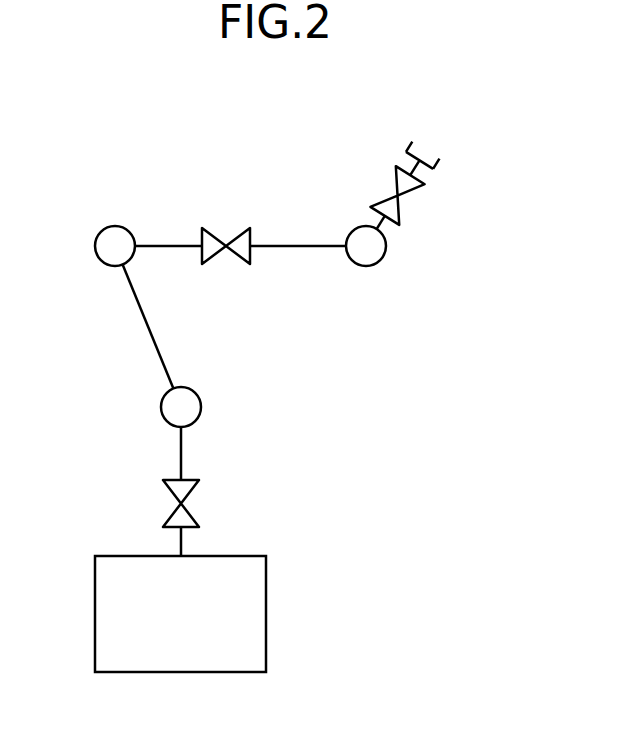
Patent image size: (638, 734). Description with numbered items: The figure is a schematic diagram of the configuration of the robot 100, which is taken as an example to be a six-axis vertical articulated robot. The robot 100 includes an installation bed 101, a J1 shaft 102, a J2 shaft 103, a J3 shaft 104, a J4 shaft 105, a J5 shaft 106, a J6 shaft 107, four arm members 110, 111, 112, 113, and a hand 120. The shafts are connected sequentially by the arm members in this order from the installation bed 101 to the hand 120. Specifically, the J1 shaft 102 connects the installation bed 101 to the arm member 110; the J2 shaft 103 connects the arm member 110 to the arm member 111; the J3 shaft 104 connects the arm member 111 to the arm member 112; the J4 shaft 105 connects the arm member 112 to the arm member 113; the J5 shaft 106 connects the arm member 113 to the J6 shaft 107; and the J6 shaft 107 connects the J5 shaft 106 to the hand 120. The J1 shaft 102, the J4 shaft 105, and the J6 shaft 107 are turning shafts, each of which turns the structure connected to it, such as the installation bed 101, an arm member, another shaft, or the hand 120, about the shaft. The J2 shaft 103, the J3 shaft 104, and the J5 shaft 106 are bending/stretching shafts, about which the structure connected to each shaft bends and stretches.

The robot 100 is at (460, 100).
The installation bed 101 is at (266, 612).
The J1 shaft 102 is at (193, 490).
The J2 shaft 103 is at (202, 405).
The J3 shaft 104 is at (113, 224).
The J4 shaft 105 is at (233, 237).
The J5 shaft 106 is at (365, 266).
The J6 shaft 107 is at (400, 208).
The arm member 110 is at (181, 456).
The arm member 111 is at (148, 330).
The arm member 112 is at (166, 247).
The arm member 113 is at (298, 247).
The hand 120 is at (408, 146).